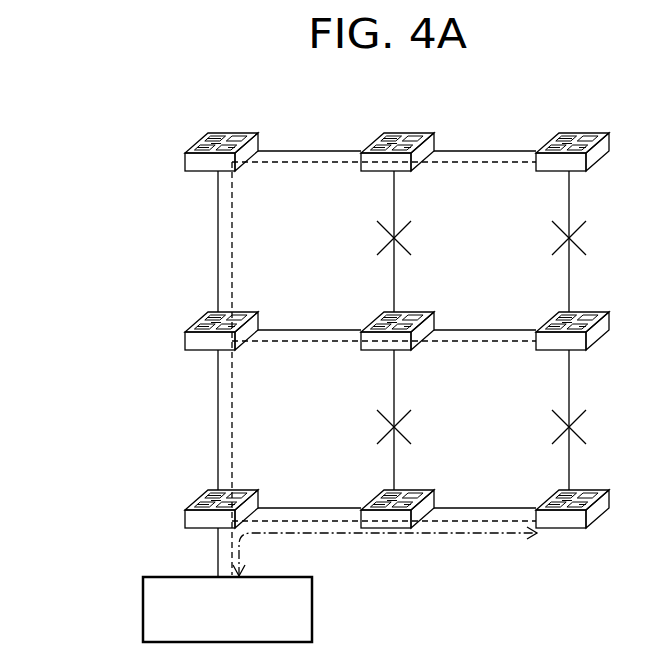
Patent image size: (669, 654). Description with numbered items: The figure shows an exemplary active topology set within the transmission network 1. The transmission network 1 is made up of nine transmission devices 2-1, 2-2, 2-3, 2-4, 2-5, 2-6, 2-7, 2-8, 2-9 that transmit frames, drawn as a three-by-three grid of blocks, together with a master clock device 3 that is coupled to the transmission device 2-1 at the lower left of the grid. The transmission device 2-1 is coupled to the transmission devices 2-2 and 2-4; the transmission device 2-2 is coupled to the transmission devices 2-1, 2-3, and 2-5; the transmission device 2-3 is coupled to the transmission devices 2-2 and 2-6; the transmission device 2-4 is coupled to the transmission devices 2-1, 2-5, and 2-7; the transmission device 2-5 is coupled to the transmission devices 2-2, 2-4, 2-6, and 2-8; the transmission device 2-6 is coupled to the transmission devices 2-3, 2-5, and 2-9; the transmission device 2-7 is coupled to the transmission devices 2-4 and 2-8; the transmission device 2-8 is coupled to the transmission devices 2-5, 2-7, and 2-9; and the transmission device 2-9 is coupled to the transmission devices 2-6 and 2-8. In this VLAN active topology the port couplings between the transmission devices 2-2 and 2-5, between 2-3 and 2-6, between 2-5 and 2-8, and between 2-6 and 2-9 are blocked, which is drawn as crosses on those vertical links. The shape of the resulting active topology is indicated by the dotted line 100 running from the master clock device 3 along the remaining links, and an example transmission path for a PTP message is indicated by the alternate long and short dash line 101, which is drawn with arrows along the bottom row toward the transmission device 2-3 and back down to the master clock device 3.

The transmission network 1 is at (149, 107).
The transmission device 2-1 is at (258, 490).
The transmission device 2-2 is at (434, 490).
The transmission device 2-3 is at (609, 490).
The transmission device 2-4 is at (258, 312).
The transmission device 2-5 is at (434, 312).
The transmission device 2-6 is at (609, 312).
The transmission device 2-7 is at (258, 133).
The transmission device 2-8 is at (434, 133).
The transmission device 2-9 is at (609, 133).
The master clock device 3 is at (313, 596).
The dotted line 100 is at (231, 438).
The alternate long and short dash line 101 is at (433, 540).